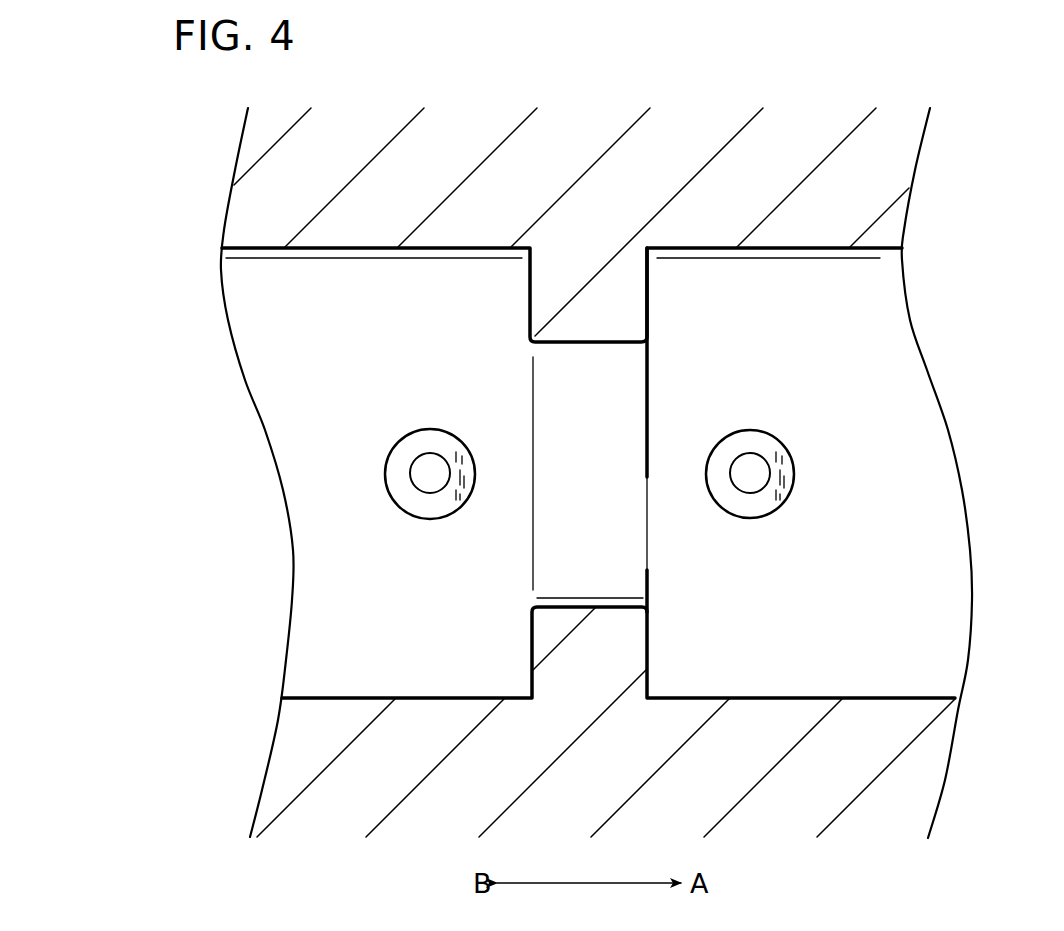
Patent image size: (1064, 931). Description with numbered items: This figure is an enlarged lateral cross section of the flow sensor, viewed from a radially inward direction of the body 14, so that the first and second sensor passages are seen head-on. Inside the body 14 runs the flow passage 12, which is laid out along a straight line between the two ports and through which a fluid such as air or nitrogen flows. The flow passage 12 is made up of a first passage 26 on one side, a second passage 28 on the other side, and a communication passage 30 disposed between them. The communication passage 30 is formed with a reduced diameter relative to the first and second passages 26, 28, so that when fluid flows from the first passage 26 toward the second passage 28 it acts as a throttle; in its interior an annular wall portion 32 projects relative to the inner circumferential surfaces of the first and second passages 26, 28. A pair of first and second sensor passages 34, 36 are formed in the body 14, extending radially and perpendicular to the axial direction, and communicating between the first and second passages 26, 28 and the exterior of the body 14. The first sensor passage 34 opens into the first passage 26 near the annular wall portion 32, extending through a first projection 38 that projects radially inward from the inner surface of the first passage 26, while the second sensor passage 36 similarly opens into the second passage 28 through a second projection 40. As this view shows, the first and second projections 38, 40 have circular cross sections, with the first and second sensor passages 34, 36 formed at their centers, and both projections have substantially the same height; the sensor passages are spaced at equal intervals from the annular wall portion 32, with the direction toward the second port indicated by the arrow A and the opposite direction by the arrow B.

The flow passage 12 is at (313, 624).
The body 14 is at (940, 720).
The first passage 26 is at (247, 305).
The second passage 28 is at (945, 487).
The communication passage 30 is at (615, 528).
The annular wall portion 32 is at (635, 292).
The first sensor passage 34 is at (422, 475).
The second sensor passage 36 is at (750, 477).
The first projection 38 is at (428, 437).
The second projection 40 is at (746, 437).